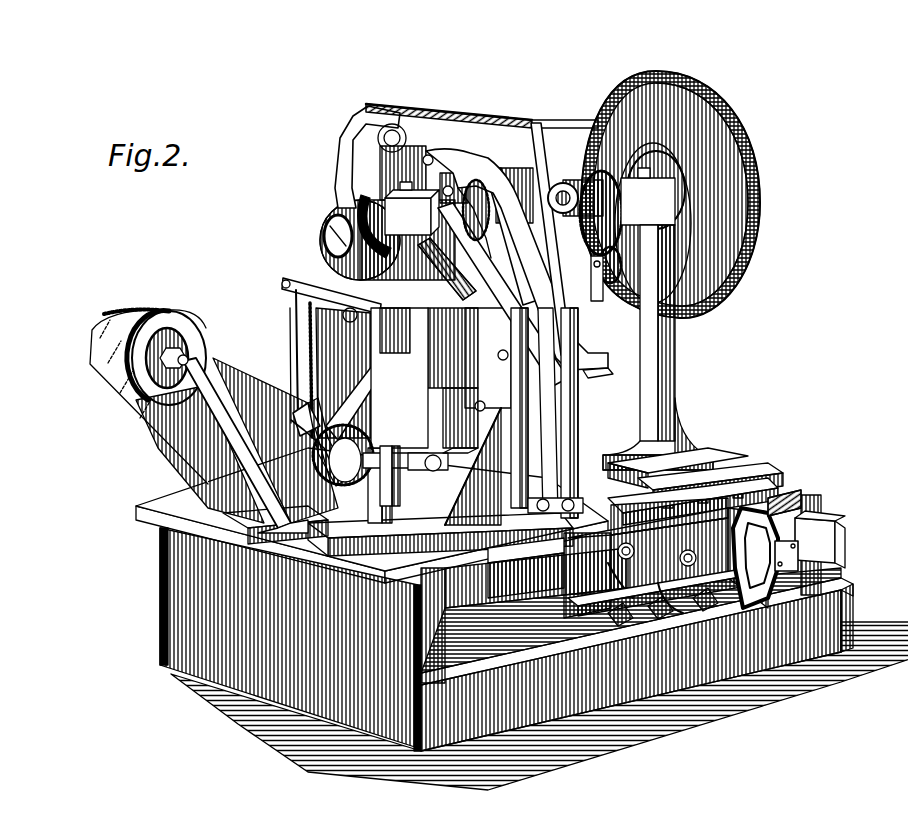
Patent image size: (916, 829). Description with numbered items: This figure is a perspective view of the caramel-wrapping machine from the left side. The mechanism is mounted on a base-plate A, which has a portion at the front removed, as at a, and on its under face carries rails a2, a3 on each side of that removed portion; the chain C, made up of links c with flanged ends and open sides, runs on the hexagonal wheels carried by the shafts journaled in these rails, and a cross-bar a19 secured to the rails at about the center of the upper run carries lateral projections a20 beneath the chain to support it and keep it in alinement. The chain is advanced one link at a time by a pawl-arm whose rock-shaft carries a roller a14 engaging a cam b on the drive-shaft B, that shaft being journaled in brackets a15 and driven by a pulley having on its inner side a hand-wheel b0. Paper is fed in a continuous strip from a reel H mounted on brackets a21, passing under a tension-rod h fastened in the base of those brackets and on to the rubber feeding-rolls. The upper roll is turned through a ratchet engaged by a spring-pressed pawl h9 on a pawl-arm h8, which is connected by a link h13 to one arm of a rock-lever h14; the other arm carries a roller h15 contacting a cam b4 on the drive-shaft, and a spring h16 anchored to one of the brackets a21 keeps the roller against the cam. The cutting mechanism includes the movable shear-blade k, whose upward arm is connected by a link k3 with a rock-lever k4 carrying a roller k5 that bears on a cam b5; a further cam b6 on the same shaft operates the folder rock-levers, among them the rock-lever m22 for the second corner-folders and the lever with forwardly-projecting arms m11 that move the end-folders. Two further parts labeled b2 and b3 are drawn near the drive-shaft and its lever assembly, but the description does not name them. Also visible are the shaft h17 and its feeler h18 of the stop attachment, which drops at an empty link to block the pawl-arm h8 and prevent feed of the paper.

The base-plate A is at (160, 496).
The reel H is at (150, 300).
The tension-rod h is at (197, 473).
The brackets a21 is at (160, 420).
The pawl-arm h8 is at (282, 412).
The spring-pressed pawl h9 is at (292, 398).
The link h13 is at (298, 336).
The rock-lever h14 is at (285, 282).
The roller h15 is at (350, 140).
The spring h16 is at (300, 310).
The shaft h17 is at (392, 528).
The feeler h18 is at (645, 420).
The brackets a15 is at (318, 352).
The drive-shaft B is at (322, 210).
The cam b is at (562, 108).
The hand-wheel b0 is at (640, 70).
The connecting rod b2 is at (525, 180).
The lever arm b3 is at (443, 125).
The cam b4 is at (338, 232).
The cam b5 is at (510, 170).
The cam b6 is at (398, 102).
The movable shear-blade k is at (395, 457).
The link k3 is at (570, 390).
The rock-lever k4 is at (575, 362).
The roller k5 is at (523, 200).
The forwardly-projecting arms m11 is at (424, 378).
The rock-lever m22 is at (690, 410).
The roller a14 is at (612, 262).
The cross-bar a19 is at (695, 432).
The lateral projections a20 is at (672, 460).
The removed portion a is at (628, 558).
The rail a2 is at (652, 565).
The rail a3 is at (838, 535).
The chain C is at (775, 492).
The links c is at (800, 562).